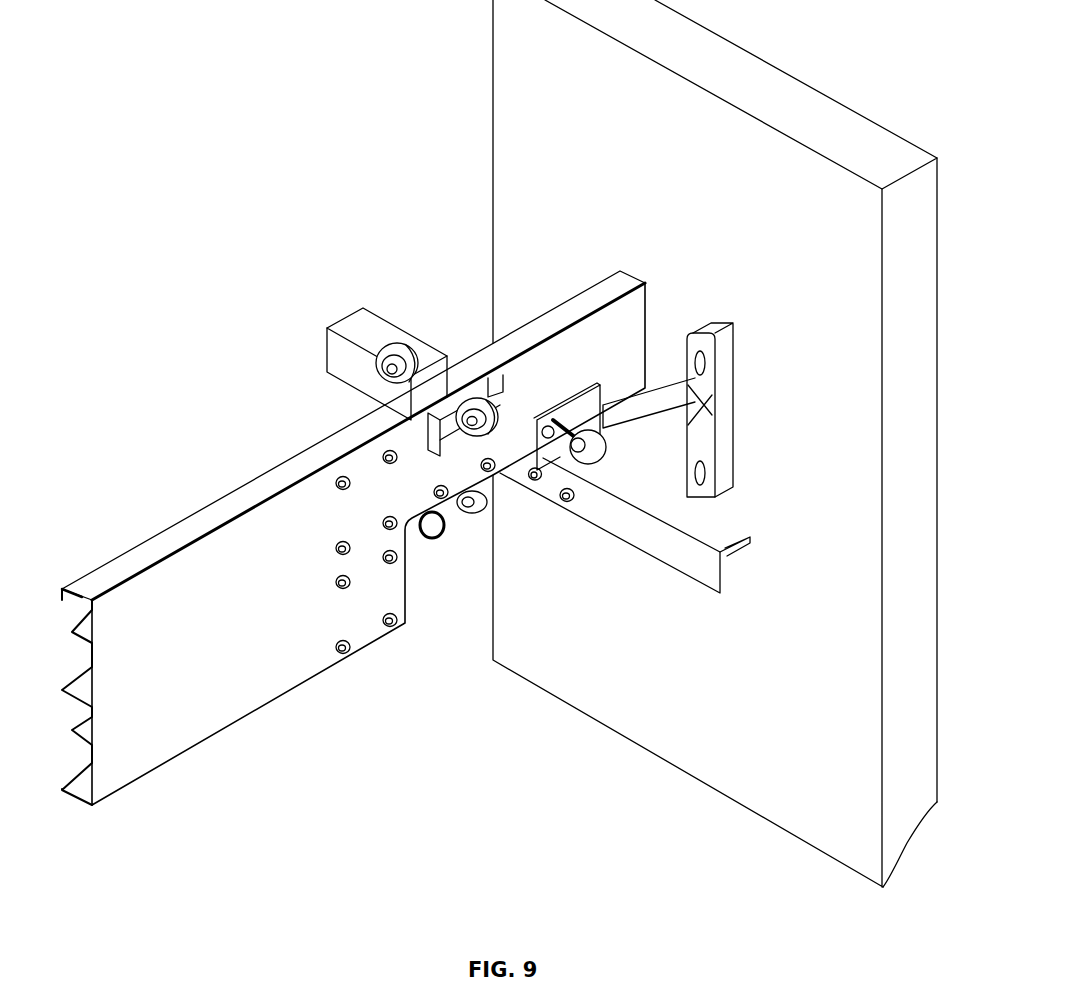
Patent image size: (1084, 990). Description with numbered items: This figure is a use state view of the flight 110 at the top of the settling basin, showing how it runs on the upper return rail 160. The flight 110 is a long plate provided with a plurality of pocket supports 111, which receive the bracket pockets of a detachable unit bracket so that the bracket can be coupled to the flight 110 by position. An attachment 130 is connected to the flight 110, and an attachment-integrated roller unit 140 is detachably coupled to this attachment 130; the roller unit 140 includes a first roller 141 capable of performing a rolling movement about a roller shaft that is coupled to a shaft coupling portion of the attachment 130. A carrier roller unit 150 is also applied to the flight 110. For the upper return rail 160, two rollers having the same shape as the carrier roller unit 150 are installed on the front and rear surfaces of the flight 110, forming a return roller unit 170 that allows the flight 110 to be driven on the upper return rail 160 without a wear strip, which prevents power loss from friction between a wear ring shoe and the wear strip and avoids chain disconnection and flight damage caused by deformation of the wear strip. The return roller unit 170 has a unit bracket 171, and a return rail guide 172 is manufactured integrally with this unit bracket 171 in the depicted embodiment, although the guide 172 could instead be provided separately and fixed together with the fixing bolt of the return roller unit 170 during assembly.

The flight 110 is at (198, 509).
The pocket supports 111 is at (493, 473).
The attachment 130 is at (441, 542).
The attachment-integrated roller unit 140 is at (374, 372).
The first roller 141 is at (400, 337).
The carrier roller unit 150 is at (490, 368).
The upper return rail 160 is at (685, 562).
The return roller unit 170 is at (592, 478).
The unit bracket 171 is at (592, 387).
The return rail guide 172 is at (543, 480).